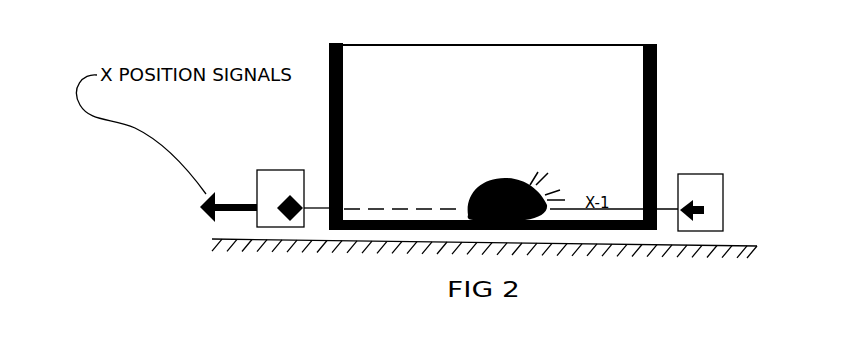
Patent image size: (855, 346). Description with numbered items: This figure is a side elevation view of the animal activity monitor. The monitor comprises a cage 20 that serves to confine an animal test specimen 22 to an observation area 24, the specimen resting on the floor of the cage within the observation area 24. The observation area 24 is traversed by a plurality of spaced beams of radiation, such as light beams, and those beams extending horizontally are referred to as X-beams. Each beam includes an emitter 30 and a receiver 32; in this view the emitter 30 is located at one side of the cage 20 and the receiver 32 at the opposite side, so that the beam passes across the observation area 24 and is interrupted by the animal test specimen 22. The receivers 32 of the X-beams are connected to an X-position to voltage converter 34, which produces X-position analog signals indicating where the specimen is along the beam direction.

The cage 20 is at (660, 61).
The animal test specimen 22 is at (514, 178).
The observation area 24 is at (423, 220).
The emitter 30 is at (690, 200).
The receiver 32 is at (292, 194).
The X-position to voltage converter 34 is at (257, 178).